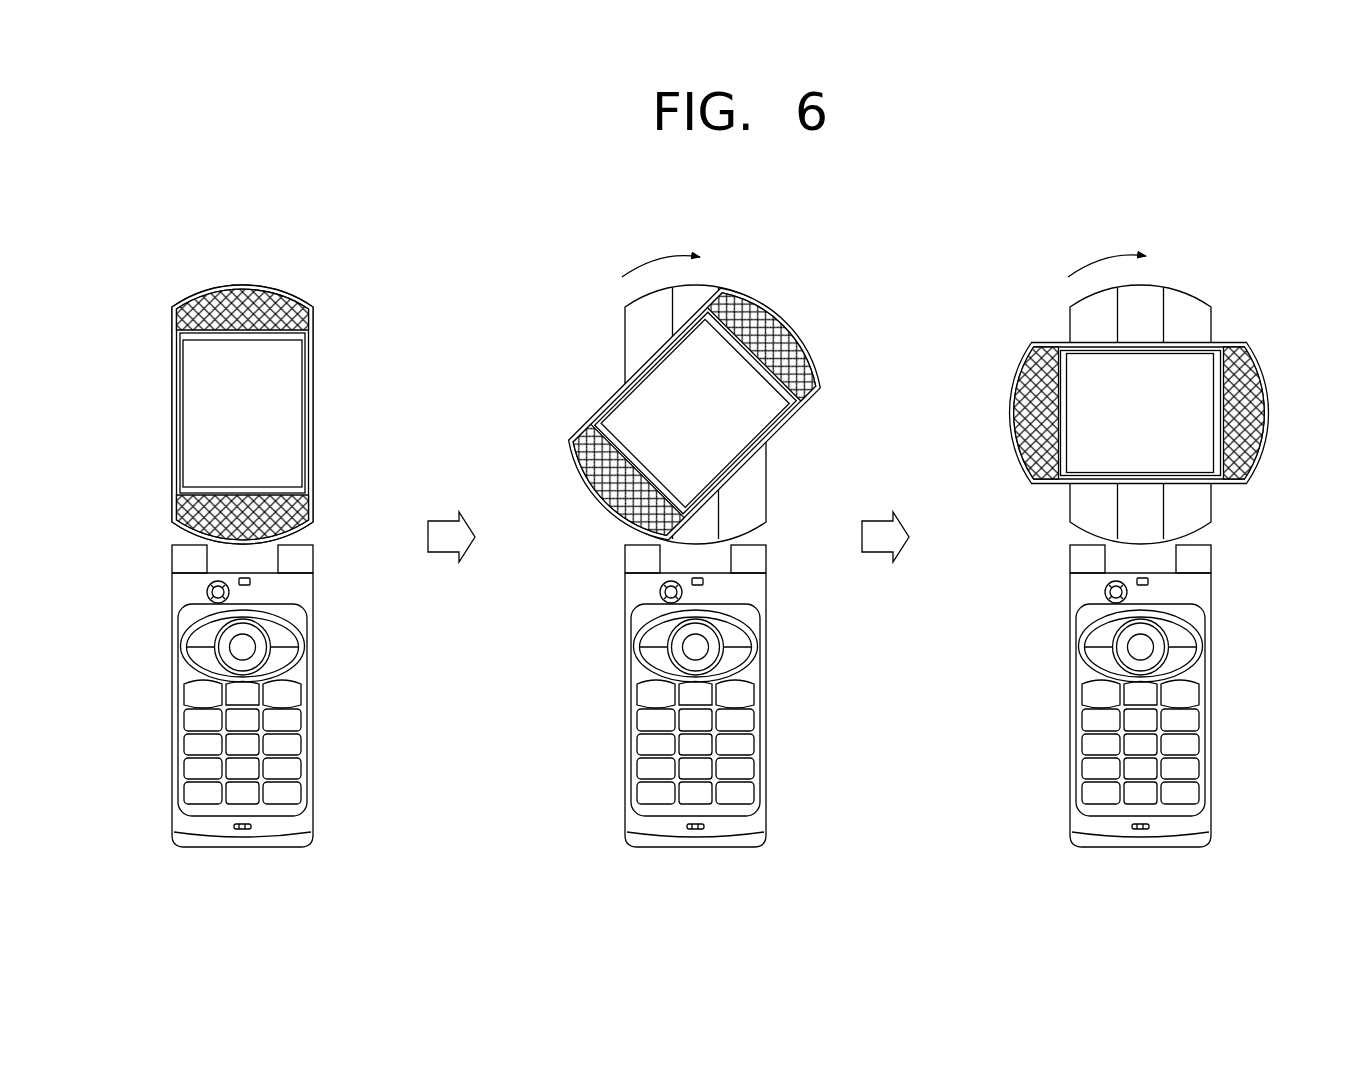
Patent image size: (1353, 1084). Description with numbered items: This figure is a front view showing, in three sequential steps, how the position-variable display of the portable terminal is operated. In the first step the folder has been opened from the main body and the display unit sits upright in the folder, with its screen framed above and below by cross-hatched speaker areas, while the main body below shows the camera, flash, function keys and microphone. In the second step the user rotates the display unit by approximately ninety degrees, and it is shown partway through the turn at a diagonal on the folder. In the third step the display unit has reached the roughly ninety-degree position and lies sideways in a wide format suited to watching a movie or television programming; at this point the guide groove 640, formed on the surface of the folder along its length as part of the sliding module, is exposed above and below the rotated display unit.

The guide groove 640 is at (1143, 297).